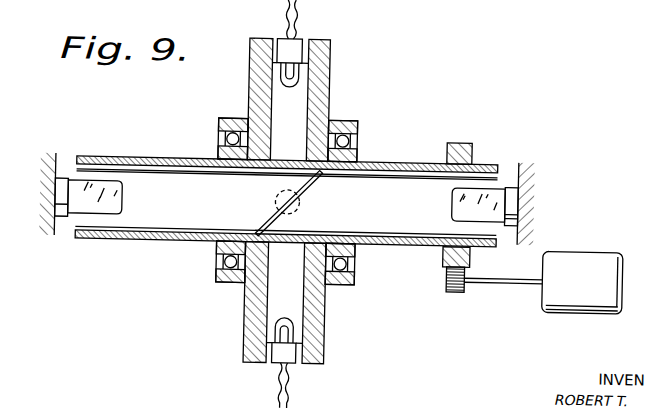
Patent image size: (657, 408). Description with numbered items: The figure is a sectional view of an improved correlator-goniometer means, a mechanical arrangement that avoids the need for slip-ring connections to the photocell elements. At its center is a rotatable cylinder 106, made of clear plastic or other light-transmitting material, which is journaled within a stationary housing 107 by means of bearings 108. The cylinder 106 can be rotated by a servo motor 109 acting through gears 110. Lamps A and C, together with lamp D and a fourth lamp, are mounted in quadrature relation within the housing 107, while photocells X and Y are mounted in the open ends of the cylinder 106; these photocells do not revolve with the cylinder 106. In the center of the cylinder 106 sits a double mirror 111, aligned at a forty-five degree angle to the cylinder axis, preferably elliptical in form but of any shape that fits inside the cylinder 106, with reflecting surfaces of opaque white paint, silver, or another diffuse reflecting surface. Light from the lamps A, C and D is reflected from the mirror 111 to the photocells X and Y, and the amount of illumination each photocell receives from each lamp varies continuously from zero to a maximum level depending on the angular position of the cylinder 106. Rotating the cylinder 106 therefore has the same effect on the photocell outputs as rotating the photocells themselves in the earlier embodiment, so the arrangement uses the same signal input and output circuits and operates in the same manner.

The rotatable cylinder 106 is at (409, 160).
The stationary housing 107 is at (327, 71).
The bearings 108 is at (356, 127).
The servo motor 109 is at (588, 247).
The gears 110 is at (444, 250).
The double mirror 111 is at (310, 180).
The lamp A is at (281, 70).
The lamp C is at (284, 330).
The lamp D is at (283, 196).
The photocell X is at (102, 218).
The photocell Y is at (482, 186).